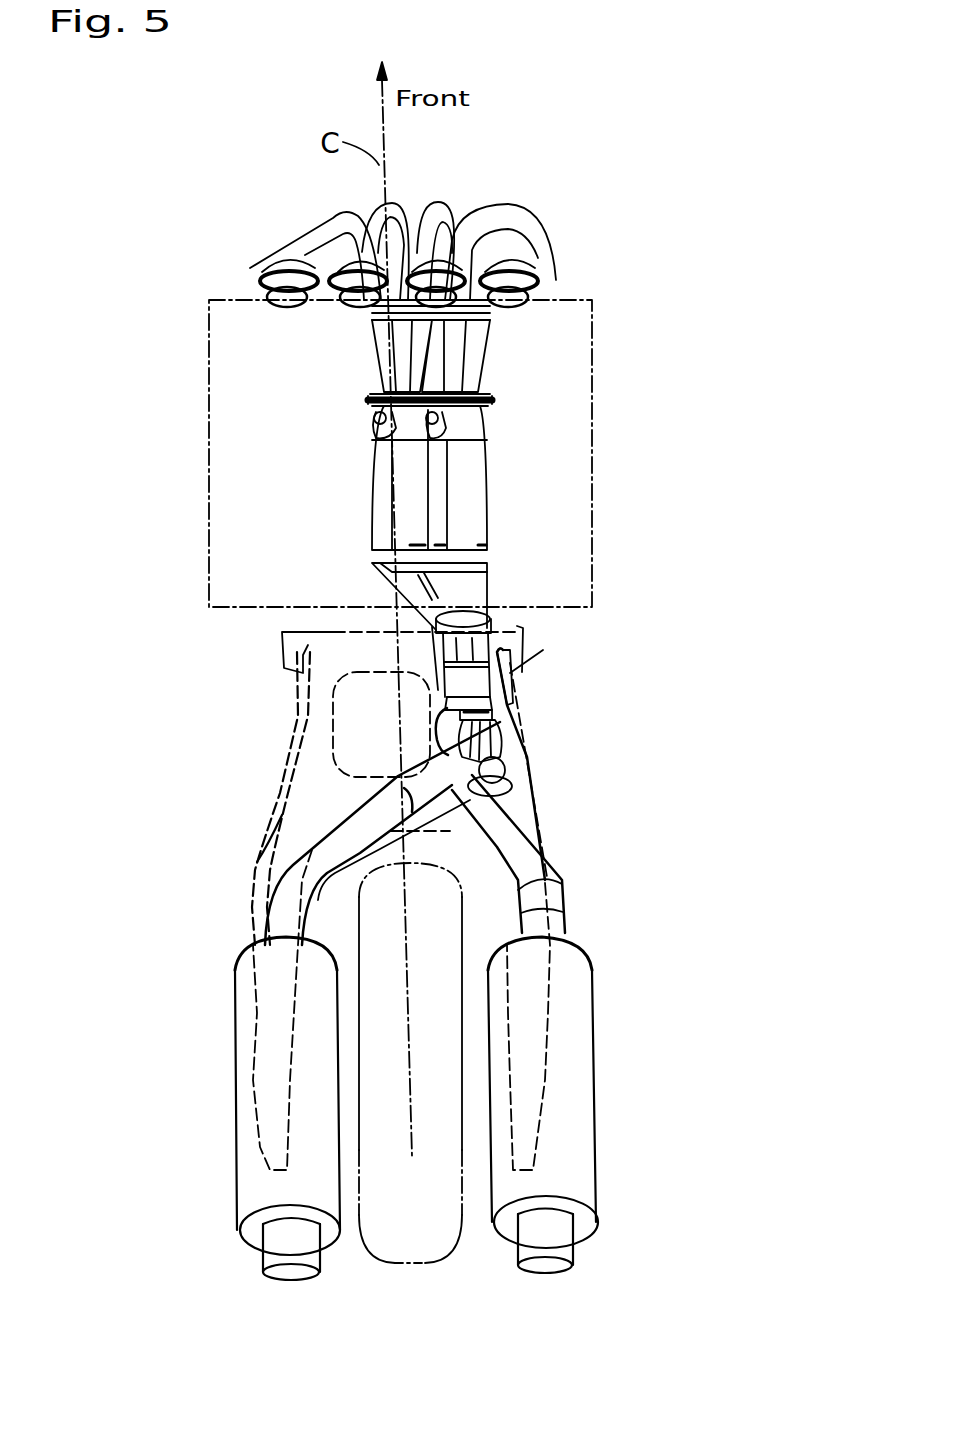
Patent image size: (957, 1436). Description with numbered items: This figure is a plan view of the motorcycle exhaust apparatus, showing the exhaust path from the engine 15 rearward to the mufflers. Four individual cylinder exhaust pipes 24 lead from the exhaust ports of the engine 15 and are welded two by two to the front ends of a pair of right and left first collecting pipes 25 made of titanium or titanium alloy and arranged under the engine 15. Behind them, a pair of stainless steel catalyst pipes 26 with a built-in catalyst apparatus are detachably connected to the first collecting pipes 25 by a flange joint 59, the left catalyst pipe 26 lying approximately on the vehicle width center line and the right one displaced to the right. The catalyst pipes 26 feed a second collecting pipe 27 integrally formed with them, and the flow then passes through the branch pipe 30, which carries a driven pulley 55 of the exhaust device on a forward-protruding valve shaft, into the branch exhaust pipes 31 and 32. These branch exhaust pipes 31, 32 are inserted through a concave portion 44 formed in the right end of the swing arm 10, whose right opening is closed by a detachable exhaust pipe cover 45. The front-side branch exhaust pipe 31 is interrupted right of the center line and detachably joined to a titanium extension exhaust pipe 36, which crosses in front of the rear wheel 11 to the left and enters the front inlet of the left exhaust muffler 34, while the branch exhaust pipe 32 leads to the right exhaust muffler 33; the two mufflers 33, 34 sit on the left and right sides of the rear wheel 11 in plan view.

The swing arm 10 is at (253, 805).
The rear wheel 11 is at (405, 1265).
The engine 15 is at (208, 402).
The cylinder exhaust pipe 24 is at (380, 221).
The first collecting pipe 25 is at (373, 340).
The catalyst pipe 26 is at (375, 478).
The second collecting pipe 27 is at (480, 612).
The branch pipe 30 is at (520, 743).
The branch exhaust pipe 31 is at (512, 783).
The branch exhaust pipe 32 is at (520, 808).
The right exhaust muffler 33 is at (585, 1163).
The left exhaust muffler 34 is at (237, 1190).
The extension exhaust pipe 36 is at (278, 890).
The concave portion 44 is at (508, 762).
The exhaust pipe cover 45 is at (543, 650).
The driven pulley 55 is at (505, 708).
The flange joint 59 is at (498, 403).